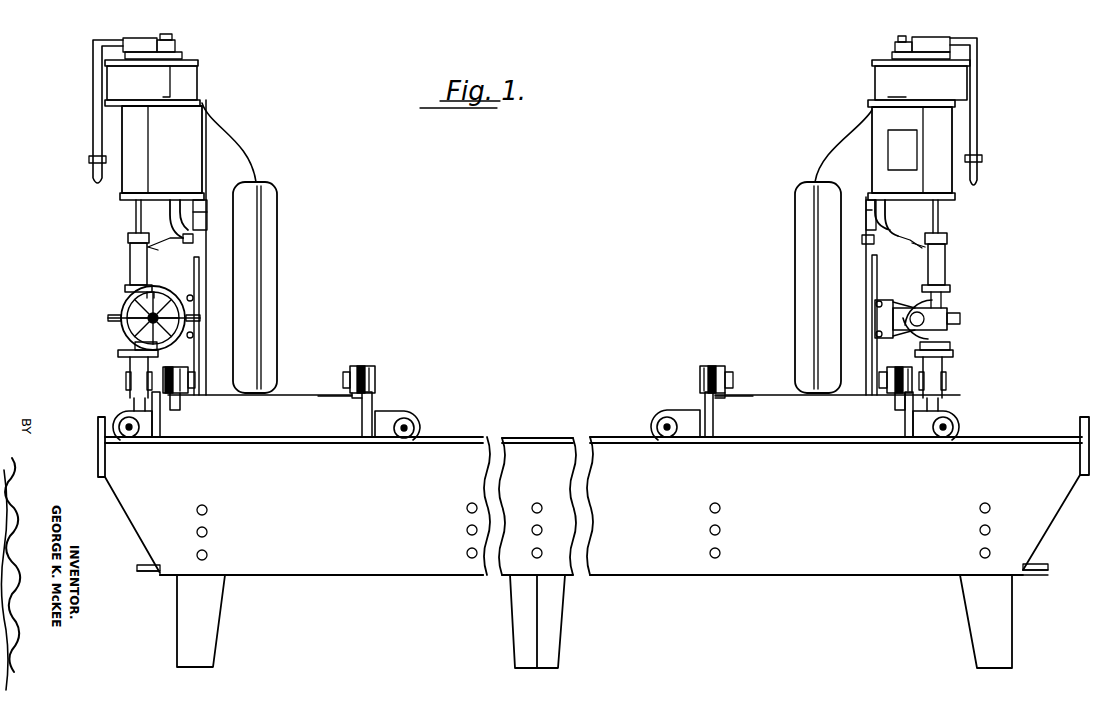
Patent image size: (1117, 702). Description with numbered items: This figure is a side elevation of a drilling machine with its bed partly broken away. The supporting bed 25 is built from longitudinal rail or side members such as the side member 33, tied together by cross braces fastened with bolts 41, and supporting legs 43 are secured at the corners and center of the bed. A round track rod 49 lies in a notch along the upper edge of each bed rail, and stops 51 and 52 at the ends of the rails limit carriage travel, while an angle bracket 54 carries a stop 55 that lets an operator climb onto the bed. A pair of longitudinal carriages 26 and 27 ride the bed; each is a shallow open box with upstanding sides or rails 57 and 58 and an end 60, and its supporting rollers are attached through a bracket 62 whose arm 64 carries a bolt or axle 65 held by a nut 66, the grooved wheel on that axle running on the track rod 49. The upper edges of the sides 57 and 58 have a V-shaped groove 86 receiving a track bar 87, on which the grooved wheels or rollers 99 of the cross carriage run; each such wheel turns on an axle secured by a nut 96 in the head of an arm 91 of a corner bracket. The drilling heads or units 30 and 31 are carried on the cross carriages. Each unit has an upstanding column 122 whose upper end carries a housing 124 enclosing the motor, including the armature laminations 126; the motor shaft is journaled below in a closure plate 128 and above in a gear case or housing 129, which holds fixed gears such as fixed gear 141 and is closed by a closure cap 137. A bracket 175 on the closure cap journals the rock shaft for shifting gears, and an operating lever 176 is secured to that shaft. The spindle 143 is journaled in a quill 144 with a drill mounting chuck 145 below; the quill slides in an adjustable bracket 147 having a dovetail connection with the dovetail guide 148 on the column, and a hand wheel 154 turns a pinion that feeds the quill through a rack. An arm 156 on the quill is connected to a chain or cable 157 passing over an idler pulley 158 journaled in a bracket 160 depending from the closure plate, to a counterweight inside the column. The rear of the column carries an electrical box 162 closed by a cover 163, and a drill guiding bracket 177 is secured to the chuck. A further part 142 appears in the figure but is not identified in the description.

The supporting bed 25 is at (437, 574).
The longitudinal carriage 26 is at (318, 396).
The longitudinal carriage 27 is at (753, 402).
The drilling head or unit 30 is at (247, 171).
The drilling head or unit 31 is at (838, 144).
The longitudinal rail or side member 33 is at (368, 560).
The bolts 41 is at (208, 533).
The supporting legs 43 is at (215, 632).
The track rod 49 is at (621, 440).
The stop 51 is at (100, 421).
The stop 52 is at (1090, 418).
The angle bracket 54 is at (142, 578).
The stop 55 is at (148, 565).
The upstanding side or rail 57 is at (904, 420).
The upstanding side or rail 58 is at (165, 415).
The end 60 is at (305, 400).
The bracket 62 is at (152, 434).
The arm 64 is at (409, 417).
The bolt or axle 65 is at (128, 438).
The nut 66 is at (404, 440).
The V-shaped groove 86 is at (180, 404).
The track bar or rod 87 is at (356, 396).
The arm 91 is at (190, 391).
The nut 96 is at (340, 394).
The grooved wheel or roller 99 is at (373, 368).
The upstanding column 122 is at (211, 232).
The housing 124 is at (190, 131).
The armature laminations 126 is at (977, 88).
The closure plate 128 is at (130, 200).
The gear case or housing 129 is at (180, 83).
The closure cap 137 is at (190, 62).
The fixed gear 141 is at (886, 331).
The frame member 142 is at (237, 311).
The spindle 143 is at (136, 226).
The quill 144 is at (131, 271).
The drill mounting chuck 145 is at (130, 351).
The adjustable bracket 147 is at (188, 299).
The dovetail guide 148 is at (199, 275).
The hand wheel 154 is at (131, 306).
The arm 156 is at (168, 250).
The chain or cable 157 is at (167, 233).
The idler pulley 158 is at (163, 244).
The bracket 160 is at (207, 208).
The box 162 is at (829, 200).
The cover 163 is at (278, 300).
The bracket 175 is at (144, 48).
The operating lever 176 is at (93, 125).
The bracket 177 is at (130, 379).